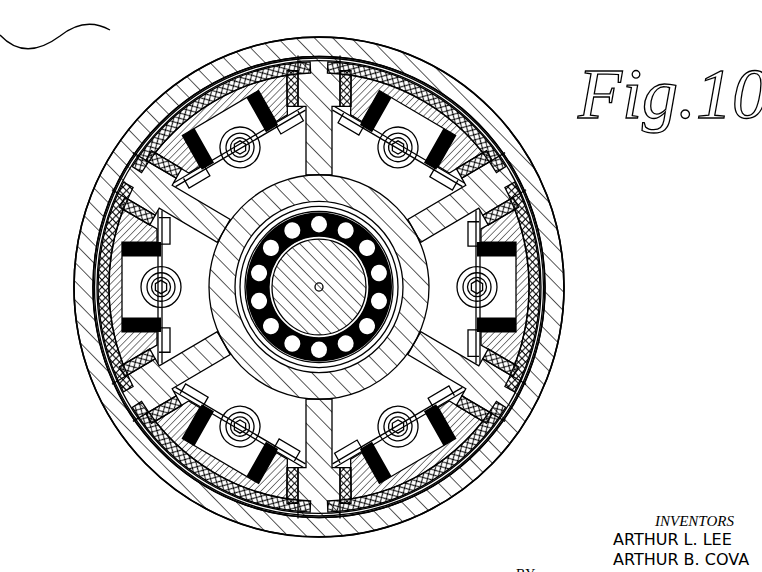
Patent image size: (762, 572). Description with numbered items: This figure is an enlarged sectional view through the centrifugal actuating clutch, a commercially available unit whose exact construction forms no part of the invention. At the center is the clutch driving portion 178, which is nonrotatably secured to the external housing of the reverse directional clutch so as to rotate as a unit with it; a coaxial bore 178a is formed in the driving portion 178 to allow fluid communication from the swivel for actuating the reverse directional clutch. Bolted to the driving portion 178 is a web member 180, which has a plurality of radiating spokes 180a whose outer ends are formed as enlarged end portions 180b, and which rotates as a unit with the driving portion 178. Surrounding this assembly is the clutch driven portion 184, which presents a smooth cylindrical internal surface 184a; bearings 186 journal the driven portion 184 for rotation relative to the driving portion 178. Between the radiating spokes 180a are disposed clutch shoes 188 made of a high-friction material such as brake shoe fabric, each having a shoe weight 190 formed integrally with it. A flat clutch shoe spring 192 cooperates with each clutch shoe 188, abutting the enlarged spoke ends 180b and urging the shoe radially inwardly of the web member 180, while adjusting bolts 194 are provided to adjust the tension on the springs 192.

The driving portion 178 is at (127, 400).
The coaxial bore 178a is at (318, 288).
The web member 180 is at (522, 420).
The radiating spokes 180a is at (487, 210).
The enlarged end portions 180b is at (492, 192).
The driven portion 184 is at (288, 520).
The smooth cylindrical internal surface 184a is at (358, 522).
The bearings 186 is at (132, 162).
The clutch shoes 188 is at (165, 125).
The shoe weights 190 is at (432, 504).
The clutch shoe spring 192 is at (535, 340).
The adjusting bolts 194 is at (222, 68).